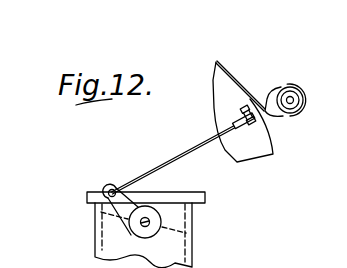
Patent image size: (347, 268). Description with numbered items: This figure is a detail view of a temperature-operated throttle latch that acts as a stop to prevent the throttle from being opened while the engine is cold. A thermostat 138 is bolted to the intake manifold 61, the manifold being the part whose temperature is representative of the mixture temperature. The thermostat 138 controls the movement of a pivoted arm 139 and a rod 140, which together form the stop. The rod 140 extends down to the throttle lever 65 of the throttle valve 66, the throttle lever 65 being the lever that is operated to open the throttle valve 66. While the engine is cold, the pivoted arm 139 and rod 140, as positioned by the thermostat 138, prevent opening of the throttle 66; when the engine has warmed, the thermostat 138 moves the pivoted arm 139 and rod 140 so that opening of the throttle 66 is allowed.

The intake manifold 61 is at (214, 78).
The throttle lever 65 is at (113, 188).
The throttle valve 66 is at (196, 222).
The thermostat 138 is at (300, 73).
The pivoted arm 139 is at (278, 124).
The rod 140 is at (168, 165).